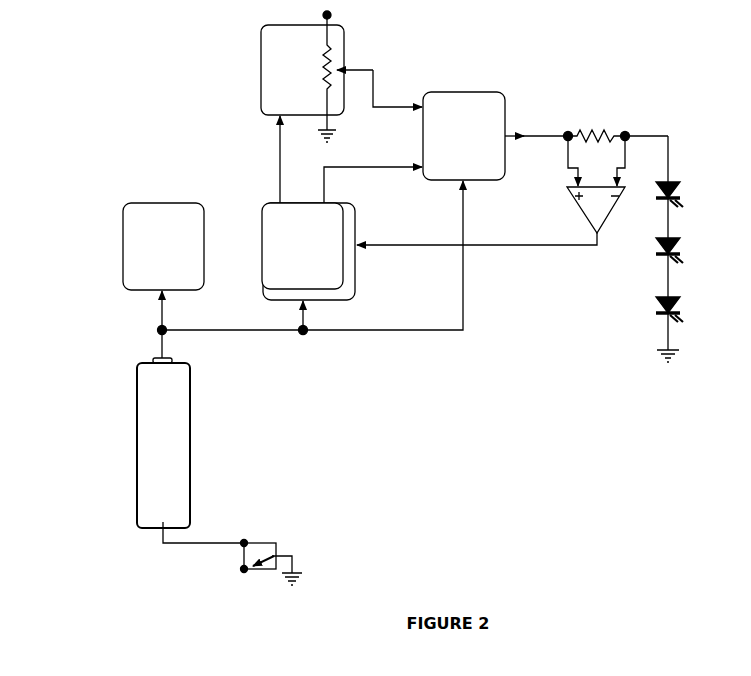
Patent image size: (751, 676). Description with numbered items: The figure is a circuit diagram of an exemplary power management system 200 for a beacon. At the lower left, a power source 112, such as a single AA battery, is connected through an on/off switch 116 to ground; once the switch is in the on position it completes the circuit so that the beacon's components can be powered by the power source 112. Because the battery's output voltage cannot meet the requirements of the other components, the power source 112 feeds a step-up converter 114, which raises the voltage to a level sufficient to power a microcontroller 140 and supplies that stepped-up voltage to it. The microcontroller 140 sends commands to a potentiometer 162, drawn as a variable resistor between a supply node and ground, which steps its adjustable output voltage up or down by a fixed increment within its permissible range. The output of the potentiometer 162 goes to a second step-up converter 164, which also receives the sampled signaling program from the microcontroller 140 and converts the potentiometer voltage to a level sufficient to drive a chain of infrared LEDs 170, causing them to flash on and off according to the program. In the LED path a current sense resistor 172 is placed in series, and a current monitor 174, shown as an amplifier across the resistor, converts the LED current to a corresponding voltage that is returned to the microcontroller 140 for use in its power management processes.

The power management system 200 is at (734, 50).
The potentiometer 162 is at (341, 76).
The step-up converter 164 is at (495, 136).
The current sense resistor 172 is at (597, 126).
The current monitor 174 is at (612, 217).
The infrared LEDs 170 is at (689, 249).
The step-up converter 114 is at (163, 266).
The microcontroller 140 is at (342, 223).
The power source 112 is at (190, 436).
The on/off switch 116 is at (263, 535).